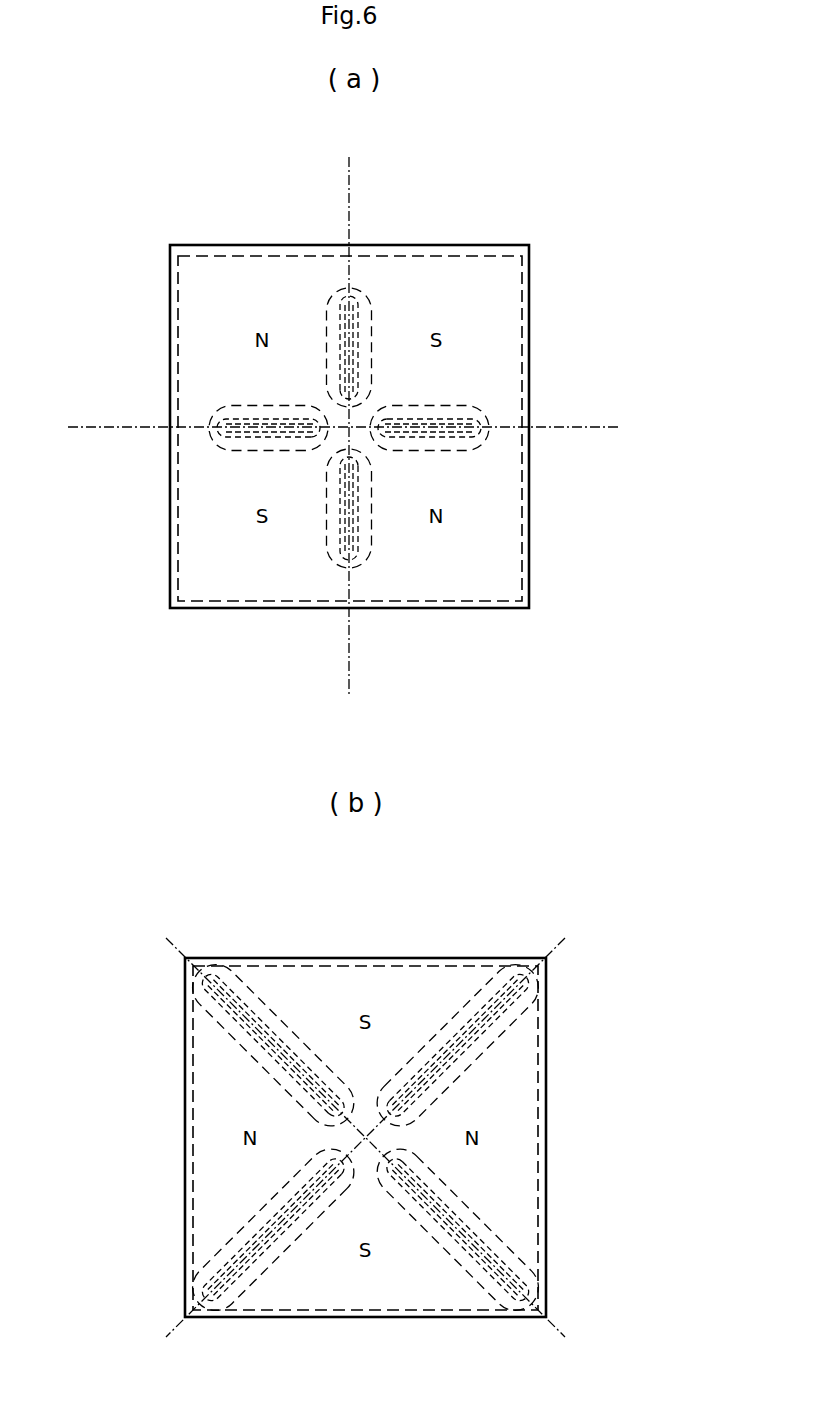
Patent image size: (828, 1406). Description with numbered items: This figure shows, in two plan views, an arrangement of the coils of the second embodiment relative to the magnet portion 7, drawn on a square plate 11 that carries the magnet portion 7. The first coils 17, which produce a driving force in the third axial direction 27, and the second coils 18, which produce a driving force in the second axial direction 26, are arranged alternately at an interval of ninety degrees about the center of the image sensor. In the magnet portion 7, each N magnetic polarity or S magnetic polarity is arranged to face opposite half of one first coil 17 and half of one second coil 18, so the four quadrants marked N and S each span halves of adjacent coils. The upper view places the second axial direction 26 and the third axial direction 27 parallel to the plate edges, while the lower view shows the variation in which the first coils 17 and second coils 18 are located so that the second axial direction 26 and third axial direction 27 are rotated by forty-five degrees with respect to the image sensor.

The magnet portion 7 is at (193, 280).
The base plate 11 is at (238, 243).
The first coil 17 is at (220, 415).
The second coil 18 is at (355, 296).
The second axial direction 26 is at (618, 427).
The third axial direction 27 is at (349, 173).